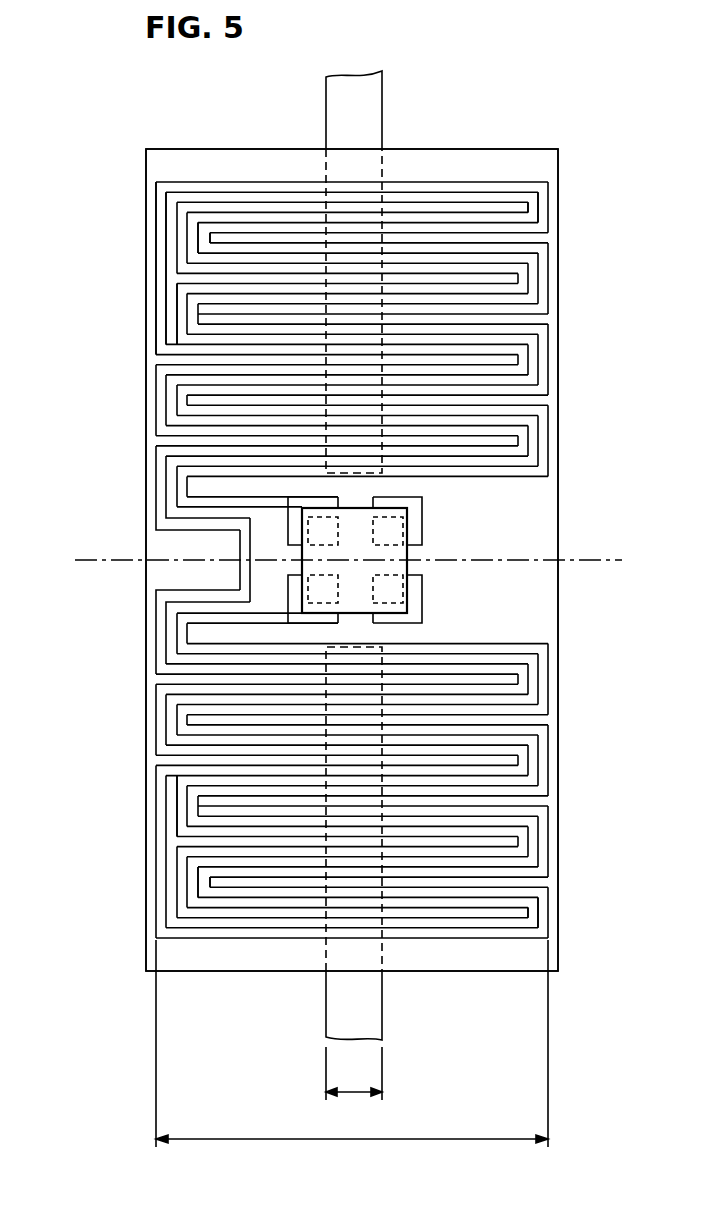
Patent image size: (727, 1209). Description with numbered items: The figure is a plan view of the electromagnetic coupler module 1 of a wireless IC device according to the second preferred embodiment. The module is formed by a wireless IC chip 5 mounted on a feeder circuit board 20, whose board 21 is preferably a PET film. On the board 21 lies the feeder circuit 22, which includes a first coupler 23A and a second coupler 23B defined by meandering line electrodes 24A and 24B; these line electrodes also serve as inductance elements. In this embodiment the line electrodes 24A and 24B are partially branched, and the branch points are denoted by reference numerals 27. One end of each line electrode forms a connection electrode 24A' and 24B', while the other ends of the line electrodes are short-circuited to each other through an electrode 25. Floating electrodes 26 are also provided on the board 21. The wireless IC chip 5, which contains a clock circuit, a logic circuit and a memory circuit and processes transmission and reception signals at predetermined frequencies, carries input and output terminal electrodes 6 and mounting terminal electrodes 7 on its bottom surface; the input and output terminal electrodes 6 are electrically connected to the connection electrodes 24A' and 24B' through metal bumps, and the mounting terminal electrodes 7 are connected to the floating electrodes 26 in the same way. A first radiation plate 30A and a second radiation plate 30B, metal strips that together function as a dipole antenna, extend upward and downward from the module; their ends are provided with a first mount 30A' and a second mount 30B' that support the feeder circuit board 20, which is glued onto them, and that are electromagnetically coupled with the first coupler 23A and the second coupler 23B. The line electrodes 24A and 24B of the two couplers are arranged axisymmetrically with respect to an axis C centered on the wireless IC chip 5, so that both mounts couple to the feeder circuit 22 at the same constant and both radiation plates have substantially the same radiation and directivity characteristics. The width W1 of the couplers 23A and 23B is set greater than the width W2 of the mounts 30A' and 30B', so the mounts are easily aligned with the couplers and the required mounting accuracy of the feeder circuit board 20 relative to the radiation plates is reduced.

The electromagnetic coupler module 1 is at (538, 90).
The feeder circuit board 20 is at (566, 463).
The board 21 is at (150, 215).
The feeder circuit 22 is at (560, 357).
The first coupler 23A is at (240, 248).
The second coupler 23B is at (240, 897).
The line electrode 24A is at (144, 488).
The line electrode 24B is at (144, 632).
The connection electrode 24A' is at (188, 547).
The connection electrode 24B' is at (175, 653).
The electrode 25 is at (242, 572).
The floating electrodes 26 is at (422, 527).
The branch points 27 is at (525, 184).
The wireless IC chip 5 is at (410, 556).
The input and output terminal electrodes 6 is at (290, 537).
The mounting terminal electrodes 7 is at (395, 519).
The first radiation plate 30A is at (403, 93).
The second radiation plate 30B is at (405, 1005).
The first mount 30A' is at (410, 284).
The second mount 30B' is at (316, 841).
The axis C is at (361, 561).
The width of the first and second couplers W1 is at (352, 1043).
The width of the first and second mounts W2 is at (354, 1073).